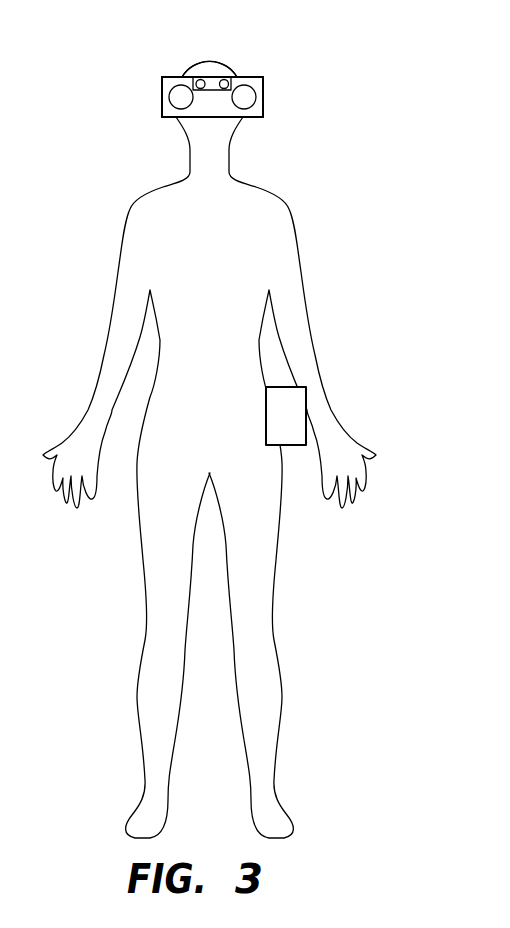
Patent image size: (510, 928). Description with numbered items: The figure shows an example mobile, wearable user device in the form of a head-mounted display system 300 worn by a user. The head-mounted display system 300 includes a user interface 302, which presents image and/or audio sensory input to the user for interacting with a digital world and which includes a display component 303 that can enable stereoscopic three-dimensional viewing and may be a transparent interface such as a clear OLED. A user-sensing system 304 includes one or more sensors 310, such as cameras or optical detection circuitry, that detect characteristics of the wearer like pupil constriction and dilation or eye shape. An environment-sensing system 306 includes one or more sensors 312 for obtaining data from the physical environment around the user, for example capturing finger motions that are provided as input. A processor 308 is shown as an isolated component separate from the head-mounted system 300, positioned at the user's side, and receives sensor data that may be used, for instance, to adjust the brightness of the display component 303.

The head-mounted display system 300 is at (214, 424).
The user interface 302 is at (210, 84).
The display component 303 is at (263, 112).
The user-sensing system 304 is at (242, 77).
The environment-sensing system 306 is at (161, 97).
The processor 308 is at (292, 445).
The sensors 310 is at (226, 78).
The sensors 312 is at (178, 93).